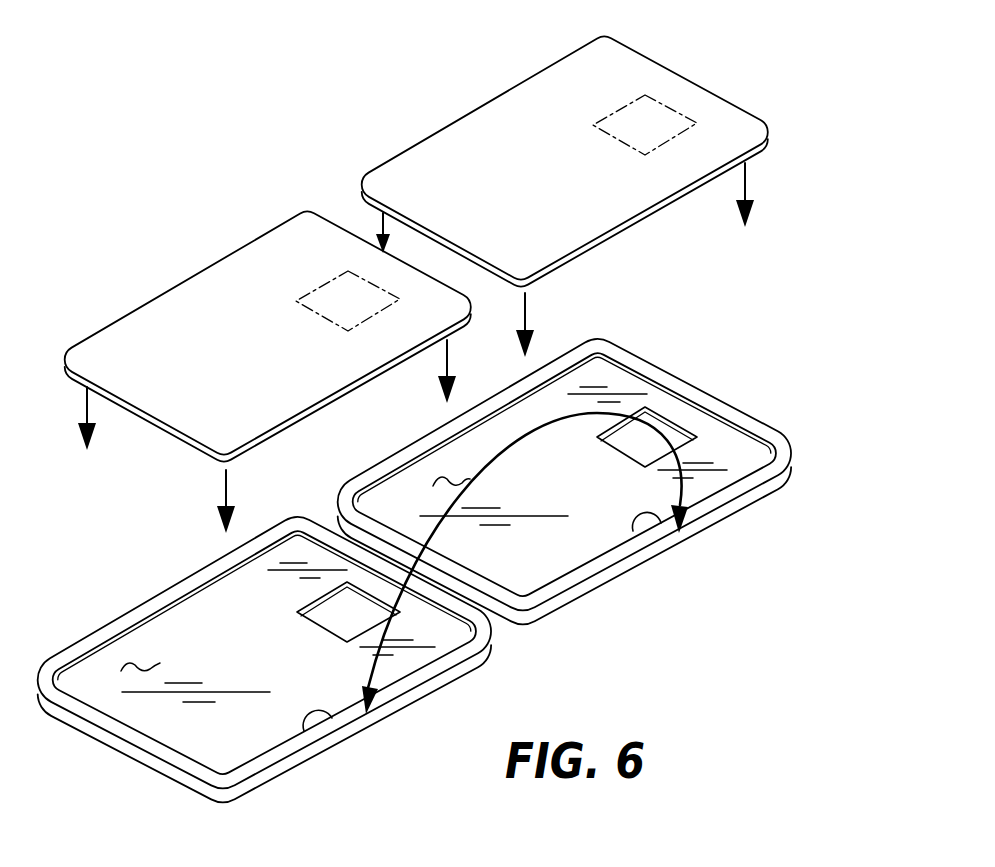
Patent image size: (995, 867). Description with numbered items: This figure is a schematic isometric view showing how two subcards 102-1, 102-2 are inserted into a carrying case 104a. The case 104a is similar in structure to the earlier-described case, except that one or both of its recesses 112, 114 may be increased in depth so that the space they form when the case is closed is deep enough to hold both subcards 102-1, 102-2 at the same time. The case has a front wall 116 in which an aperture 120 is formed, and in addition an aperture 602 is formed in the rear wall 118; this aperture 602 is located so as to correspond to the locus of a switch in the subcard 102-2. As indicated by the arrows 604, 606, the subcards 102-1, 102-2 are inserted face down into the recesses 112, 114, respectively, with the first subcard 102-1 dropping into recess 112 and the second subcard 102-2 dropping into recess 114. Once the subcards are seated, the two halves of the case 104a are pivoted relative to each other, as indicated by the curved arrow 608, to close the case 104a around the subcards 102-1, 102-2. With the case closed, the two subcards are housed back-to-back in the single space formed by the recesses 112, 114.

The subcard 102-1 is at (518, 74).
The subcard 102-2 is at (220, 251).
The carrying case 104a is at (598, 643).
The recess 112 is at (676, 538).
The recess 114 is at (333, 718).
The front wall 116 is at (452, 480).
The rear wall 118 is at (142, 664).
The aperture 120 is at (655, 415).
The aperture 602 is at (318, 619).
The arrow 604 is at (527, 310).
The arrow 606 is at (224, 487).
The arrow 608 is at (538, 433).